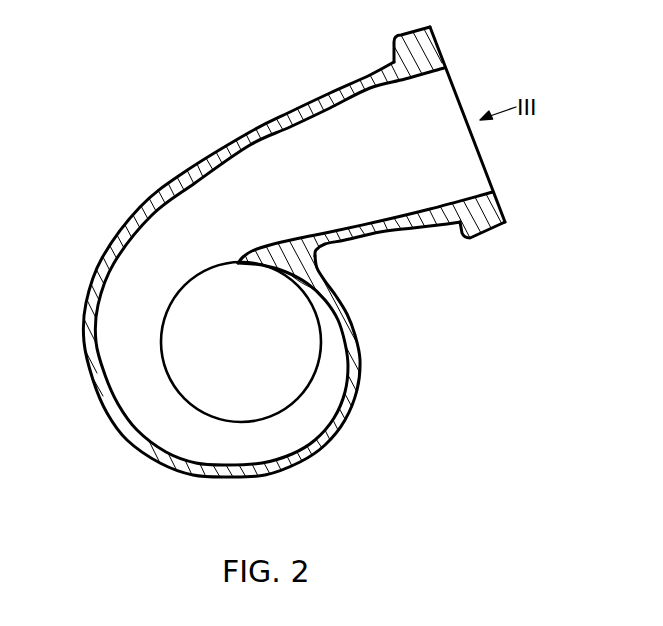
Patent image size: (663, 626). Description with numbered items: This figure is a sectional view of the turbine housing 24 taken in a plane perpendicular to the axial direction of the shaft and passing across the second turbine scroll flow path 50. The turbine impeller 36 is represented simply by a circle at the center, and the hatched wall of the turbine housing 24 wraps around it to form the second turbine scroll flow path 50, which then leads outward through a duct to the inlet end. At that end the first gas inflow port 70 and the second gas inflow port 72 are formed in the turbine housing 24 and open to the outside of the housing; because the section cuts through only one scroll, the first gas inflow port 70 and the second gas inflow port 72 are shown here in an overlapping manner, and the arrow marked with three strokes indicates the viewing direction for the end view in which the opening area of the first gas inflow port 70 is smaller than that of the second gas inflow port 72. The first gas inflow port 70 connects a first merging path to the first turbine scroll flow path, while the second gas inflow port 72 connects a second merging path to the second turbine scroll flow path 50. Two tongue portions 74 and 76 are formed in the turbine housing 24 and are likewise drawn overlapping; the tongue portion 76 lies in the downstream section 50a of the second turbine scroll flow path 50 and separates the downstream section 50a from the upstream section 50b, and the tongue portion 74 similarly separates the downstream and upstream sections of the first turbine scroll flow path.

The turbine housing 24 is at (333, 91).
The turbine impeller 36 is at (306, 394).
The second turbine scroll flow path 50 is at (163, 258).
The downstream section 50a is at (332, 264).
The upstream section 50b is at (235, 234).
The first gas inflow port 70 is at (487, 169).
The second gas inflow port 72 is at (446, 71).
The tongue portion 74 is at (238, 268).
The tongue portion 76 is at (238, 266).